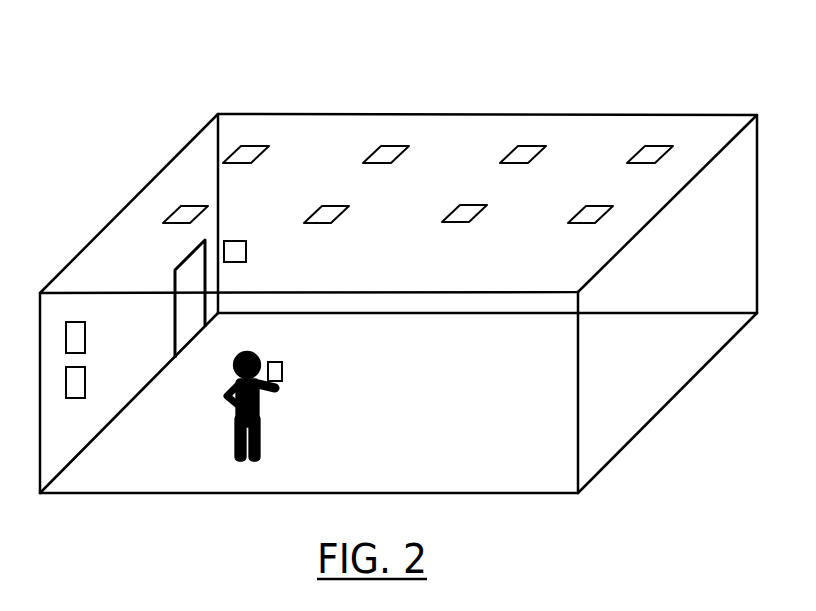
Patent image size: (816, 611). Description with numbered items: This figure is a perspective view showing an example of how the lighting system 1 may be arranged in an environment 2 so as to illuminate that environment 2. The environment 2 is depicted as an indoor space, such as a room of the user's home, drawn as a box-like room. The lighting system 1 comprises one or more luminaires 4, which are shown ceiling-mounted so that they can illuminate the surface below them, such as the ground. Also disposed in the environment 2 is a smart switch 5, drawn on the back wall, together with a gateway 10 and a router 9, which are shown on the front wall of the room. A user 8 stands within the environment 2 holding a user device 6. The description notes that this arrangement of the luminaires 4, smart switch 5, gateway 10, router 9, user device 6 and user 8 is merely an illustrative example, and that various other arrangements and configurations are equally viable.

The lighting system 1 is at (737, 82).
The environment 2 is at (617, 113).
The luminaire 4 is at (463, 210).
The smart switch 5 is at (244, 241).
The user device 6 is at (283, 368).
The user 8 is at (230, 395).
The router 9 is at (85, 370).
The gateway 10 is at (85, 332).